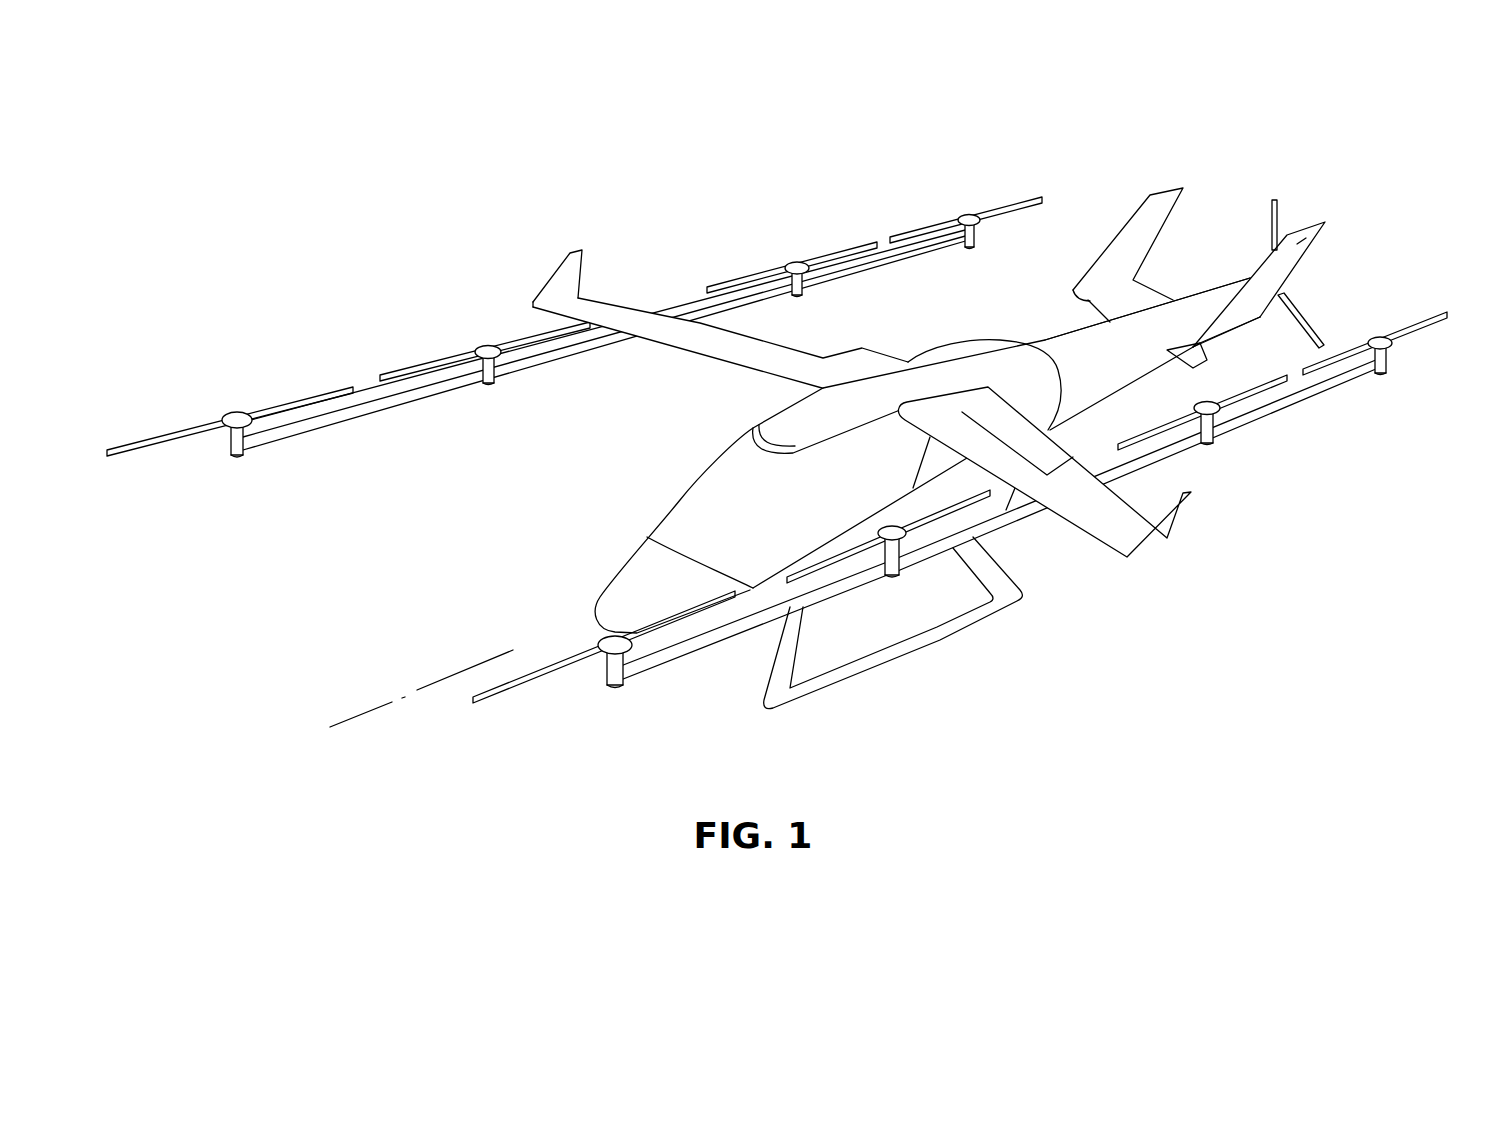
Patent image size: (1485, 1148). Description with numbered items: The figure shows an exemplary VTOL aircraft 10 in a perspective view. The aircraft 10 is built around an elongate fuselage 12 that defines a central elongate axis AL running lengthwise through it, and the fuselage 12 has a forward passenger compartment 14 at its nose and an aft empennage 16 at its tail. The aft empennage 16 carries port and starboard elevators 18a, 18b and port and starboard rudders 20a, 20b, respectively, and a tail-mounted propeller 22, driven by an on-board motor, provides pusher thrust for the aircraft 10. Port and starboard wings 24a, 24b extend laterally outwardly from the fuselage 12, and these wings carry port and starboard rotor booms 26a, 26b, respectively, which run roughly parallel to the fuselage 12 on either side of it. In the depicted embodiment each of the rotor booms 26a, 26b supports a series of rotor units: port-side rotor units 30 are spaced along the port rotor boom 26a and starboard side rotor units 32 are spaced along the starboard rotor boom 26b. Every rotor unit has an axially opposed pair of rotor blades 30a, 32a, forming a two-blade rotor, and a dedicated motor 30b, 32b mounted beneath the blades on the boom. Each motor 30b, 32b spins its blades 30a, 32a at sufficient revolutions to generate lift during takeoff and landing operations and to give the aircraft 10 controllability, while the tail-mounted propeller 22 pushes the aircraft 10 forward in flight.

The VTOL aircraft 10 is at (316, 573).
The fuselage 12 is at (845, 428).
The forward passenger compartment 14 is at (630, 528).
The aft empennage 16 is at (1212, 272).
The port elevator 18a is at (1168, 352).
The starboard elevator 18b is at (1088, 300).
The port rudder 20a is at (1327, 222).
The starboard rudder 20b is at (1130, 222).
The tail-mounted propeller 22 is at (1300, 316).
The port wing 24a is at (1007, 423).
The starboard wing 24b is at (707, 345).
The port rotor boom 26a is at (1297, 418).
The starboard rotor boom 26b is at (370, 417).
The port-side rotor unit 30 is at (588, 636).
The rotor blade 30a is at (598, 668).
The motor 30b is at (622, 690).
The starboard side rotor unit 32 is at (268, 388).
The rotor blade 32a is at (203, 423).
The motor 32b is at (232, 458).
The central elongate axis AL is at (347, 720).